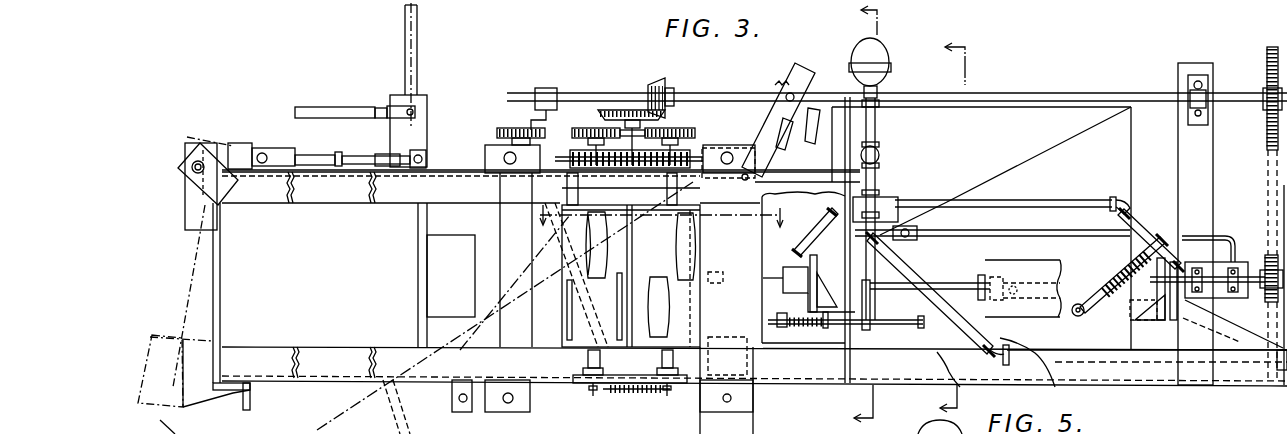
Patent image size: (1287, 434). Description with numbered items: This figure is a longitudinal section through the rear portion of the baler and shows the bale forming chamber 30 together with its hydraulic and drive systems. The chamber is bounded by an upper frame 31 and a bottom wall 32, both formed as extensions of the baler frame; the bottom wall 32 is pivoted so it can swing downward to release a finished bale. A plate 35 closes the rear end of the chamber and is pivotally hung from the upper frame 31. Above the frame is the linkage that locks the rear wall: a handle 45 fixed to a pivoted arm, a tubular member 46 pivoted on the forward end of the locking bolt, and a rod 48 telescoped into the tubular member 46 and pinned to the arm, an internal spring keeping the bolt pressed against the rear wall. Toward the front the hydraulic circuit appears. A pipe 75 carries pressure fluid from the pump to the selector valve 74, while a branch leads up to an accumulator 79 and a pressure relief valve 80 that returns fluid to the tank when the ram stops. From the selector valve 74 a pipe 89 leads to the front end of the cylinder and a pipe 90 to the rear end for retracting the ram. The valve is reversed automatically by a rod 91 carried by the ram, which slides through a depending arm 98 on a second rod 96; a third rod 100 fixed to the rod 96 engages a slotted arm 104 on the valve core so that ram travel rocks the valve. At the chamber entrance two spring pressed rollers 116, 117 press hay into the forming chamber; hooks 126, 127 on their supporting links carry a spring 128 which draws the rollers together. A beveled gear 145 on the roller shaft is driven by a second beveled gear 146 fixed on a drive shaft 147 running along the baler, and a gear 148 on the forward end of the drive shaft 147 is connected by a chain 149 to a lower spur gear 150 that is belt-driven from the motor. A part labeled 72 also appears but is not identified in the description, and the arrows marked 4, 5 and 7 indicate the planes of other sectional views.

The bale forming chamber 30 is at (541, 211).
The upper frame 31 is at (436, 173).
The bottom wall 32 is at (332, 346).
The plate 35 is at (239, 306).
The handle 45 is at (336, 110).
The tubular member 46 is at (320, 156).
The rod 48 is at (361, 156).
The cylinder support 72 is at (1238, 323).
The selector valve 74 is at (896, 202).
The pipe 75 is at (962, 322).
The accumulator 79 is at (884, 56).
The pressure relief valve 80 is at (880, 160).
The pipe 89 is at (1038, 206).
The pipe 90 is at (818, 228).
The rod 91 is at (901, 325).
The second rod 96 is at (973, 286).
The depending arm 98 is at (870, 307).
The third rod 100 is at (1040, 234).
The arm 104 is at (918, 226).
The spring pressed roller 116 is at (576, 294).
The spring pressed roller 117 is at (704, 306).
The hook 126 is at (668, 396).
The hook 127 is at (593, 396).
The spring 128 is at (635, 397).
The beveled gear 145 is at (612, 105).
The second beveled gear 146 is at (673, 82).
The drive shaft 147 is at (576, 94).
The gear 148 is at (1266, 58).
The chain 149 is at (1266, 169).
The lower spur gear 150 is at (1263, 257).
The section line 4- 4 is at (668, 222).
The section line 5- 5 is at (951, 228).
The section line 7- 7 is at (861, 214).